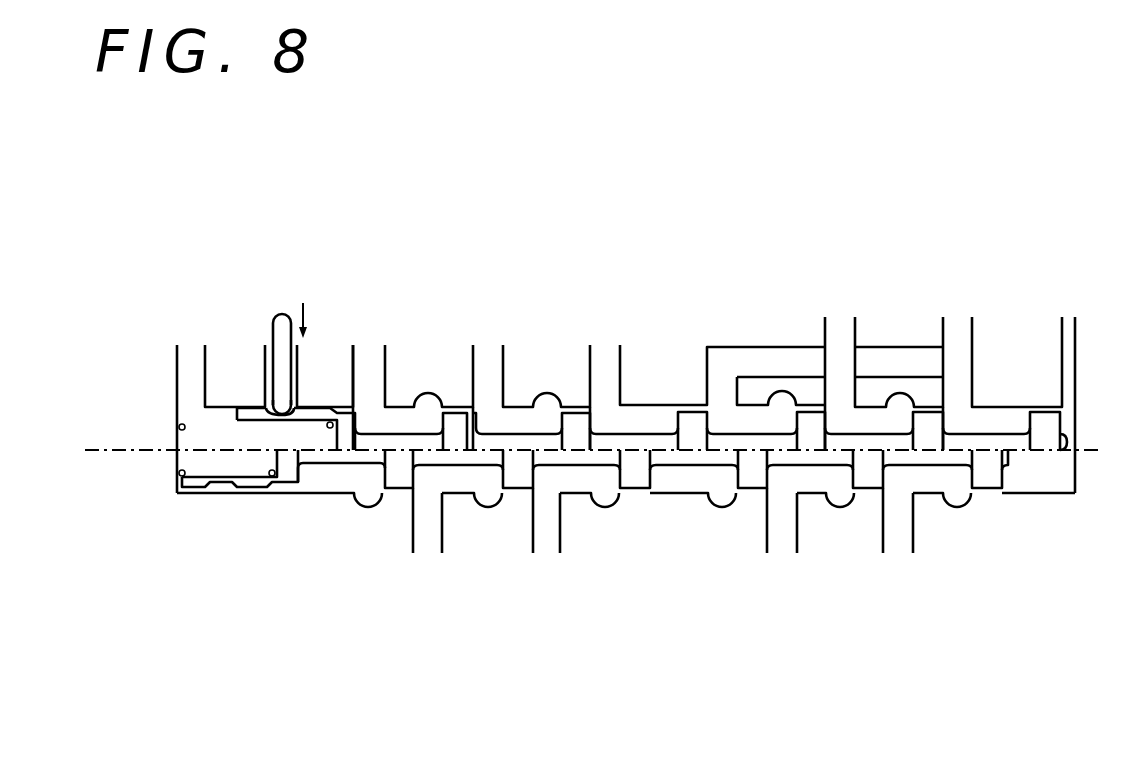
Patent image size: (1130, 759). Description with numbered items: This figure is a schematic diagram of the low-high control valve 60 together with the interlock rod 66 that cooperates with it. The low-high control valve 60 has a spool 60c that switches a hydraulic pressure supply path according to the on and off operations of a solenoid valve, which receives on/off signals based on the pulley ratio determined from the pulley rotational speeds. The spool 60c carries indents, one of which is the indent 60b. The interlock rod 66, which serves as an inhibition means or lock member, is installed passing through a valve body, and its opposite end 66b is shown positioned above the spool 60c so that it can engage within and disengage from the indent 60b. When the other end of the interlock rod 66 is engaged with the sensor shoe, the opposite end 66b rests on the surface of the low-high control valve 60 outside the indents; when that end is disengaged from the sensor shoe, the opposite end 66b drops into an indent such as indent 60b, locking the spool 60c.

The low-high control valve 60 is at (745, 222).
The indent 60b is at (295, 400).
The spool 60c is at (628, 433).
The interlock rod 66 is at (262, 332).
The opposite end of interlock rod 66b is at (278, 405).